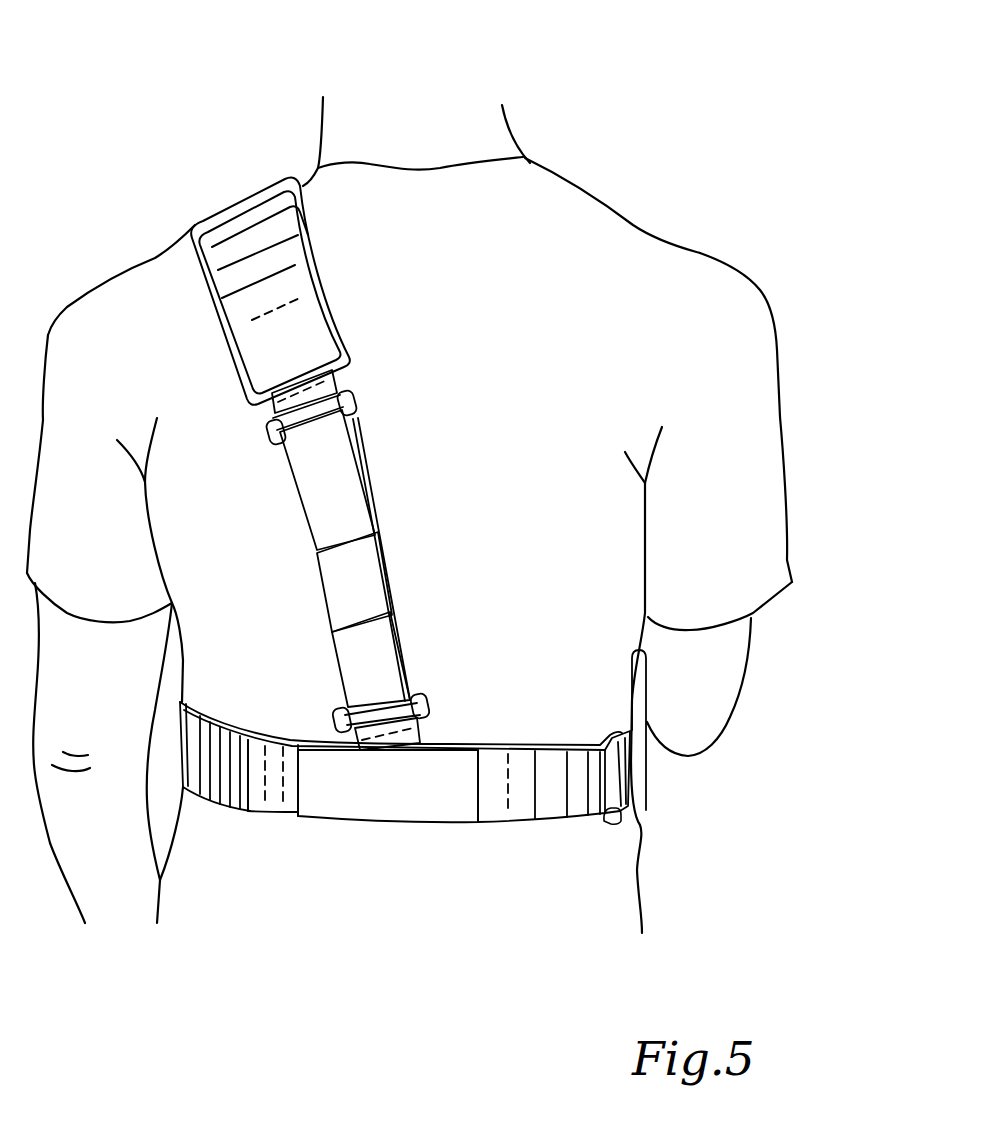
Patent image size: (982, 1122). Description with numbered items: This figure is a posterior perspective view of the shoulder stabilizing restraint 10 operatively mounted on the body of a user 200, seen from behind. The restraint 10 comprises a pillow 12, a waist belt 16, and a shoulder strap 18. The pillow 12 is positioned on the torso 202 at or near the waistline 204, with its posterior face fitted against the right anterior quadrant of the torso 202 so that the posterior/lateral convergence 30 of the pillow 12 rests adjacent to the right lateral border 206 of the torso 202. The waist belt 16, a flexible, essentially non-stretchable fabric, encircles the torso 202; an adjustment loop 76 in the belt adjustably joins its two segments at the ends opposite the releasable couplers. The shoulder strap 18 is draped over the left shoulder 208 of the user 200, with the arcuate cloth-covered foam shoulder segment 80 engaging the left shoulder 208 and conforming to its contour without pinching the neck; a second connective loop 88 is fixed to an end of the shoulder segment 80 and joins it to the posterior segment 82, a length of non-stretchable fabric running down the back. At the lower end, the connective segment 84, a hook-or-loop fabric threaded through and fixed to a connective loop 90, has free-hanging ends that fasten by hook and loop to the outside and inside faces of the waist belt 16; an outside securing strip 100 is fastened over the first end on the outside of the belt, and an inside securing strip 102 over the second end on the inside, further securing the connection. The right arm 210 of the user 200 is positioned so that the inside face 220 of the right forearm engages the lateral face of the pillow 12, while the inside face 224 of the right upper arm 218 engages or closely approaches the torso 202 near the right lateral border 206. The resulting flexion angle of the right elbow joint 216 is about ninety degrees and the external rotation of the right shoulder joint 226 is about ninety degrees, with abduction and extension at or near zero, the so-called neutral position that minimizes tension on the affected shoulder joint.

The shoulder stabilizing restraint 10 is at (170, 70).
The pillow 12 is at (646, 752).
The waist belt 16 is at (273, 797).
The shoulder strap 18 is at (352, 497).
The posterior/lateral convergence 30 is at (633, 787).
The adjustment loop 76 is at (611, 812).
The shoulder segment 80 is at (238, 203).
The posterior segment 82 is at (373, 577).
The connective segment 84 is at (383, 672).
The second connective loop 88 is at (323, 397).
The connective loop 90 is at (340, 733).
The outside securing strip 100 is at (397, 807).
The inside securing strip 102 is at (463, 740).
The user 200 is at (519, 137).
The torso 202 is at (600, 203).
The waistline 204 is at (266, 813).
The right lateral border 206 is at (628, 803).
The left shoulder 208 is at (155, 258).
The right arm 210 is at (760, 338).
The right elbow joint 216 is at (650, 732).
The right upper arm 218 is at (767, 428).
The inside face 220 is at (718, 650).
The inside face 224 is at (648, 533).
The right shoulder joint 226 is at (697, 248).